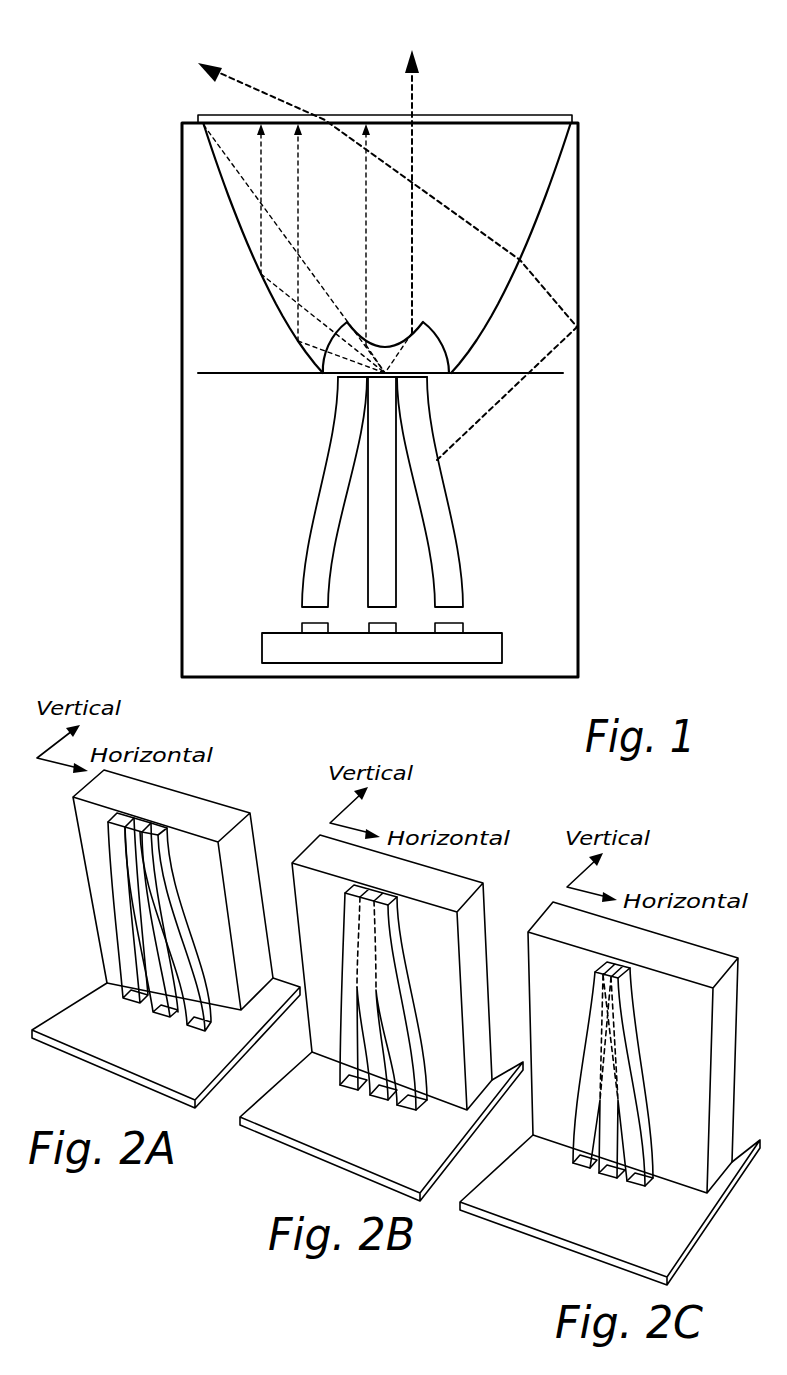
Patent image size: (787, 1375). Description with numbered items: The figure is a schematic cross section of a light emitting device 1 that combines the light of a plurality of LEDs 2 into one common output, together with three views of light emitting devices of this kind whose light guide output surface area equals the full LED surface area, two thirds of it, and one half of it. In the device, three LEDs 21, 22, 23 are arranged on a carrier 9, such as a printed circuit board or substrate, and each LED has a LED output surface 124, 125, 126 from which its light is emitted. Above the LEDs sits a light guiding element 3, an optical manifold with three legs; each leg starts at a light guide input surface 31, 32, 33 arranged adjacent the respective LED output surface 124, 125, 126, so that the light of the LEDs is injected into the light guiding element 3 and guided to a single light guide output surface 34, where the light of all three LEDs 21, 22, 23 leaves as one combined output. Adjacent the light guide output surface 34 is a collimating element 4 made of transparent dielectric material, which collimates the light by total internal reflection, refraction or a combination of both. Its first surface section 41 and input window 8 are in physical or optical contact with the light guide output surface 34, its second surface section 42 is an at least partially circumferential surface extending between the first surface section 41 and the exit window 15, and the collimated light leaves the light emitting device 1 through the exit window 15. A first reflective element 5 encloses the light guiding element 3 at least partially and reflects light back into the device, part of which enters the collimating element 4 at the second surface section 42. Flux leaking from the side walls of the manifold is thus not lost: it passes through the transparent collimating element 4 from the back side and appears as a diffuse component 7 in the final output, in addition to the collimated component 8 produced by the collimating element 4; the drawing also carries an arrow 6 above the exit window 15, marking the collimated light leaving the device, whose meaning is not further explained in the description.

The light emitting device 1 is at (97, 247).
The plurality of LEDs 2 is at (497, 597).
The light guiding element 3 is at (463, 597).
The collimating element 4 is at (550, 183).
The first reflective element 5 is at (580, 432).
The collimated light beam 6 is at (410, 85).
The diffuse component 7 is at (229, 78).
The input window 8 is at (237, 372).
The carrier 9 is at (482, 636).
The exit window 15 is at (523, 115).
The LED 21 is at (315, 633).
The LED 22 is at (382, 633).
The LED 23 is at (448, 633).
The light guide input surface 31 is at (313, 603).
The light guide input surface 32 is at (383, 603).
The light guide input surface 33 is at (442, 600).
The light guide output surface 34 is at (413, 375).
The first surface section 41 is at (338, 360).
The second surface section 42 is at (233, 218).
The LED output surface 124 is at (308, 623).
The LED output surface 125 is at (388, 625).
The LED output surface 126 is at (447, 618).